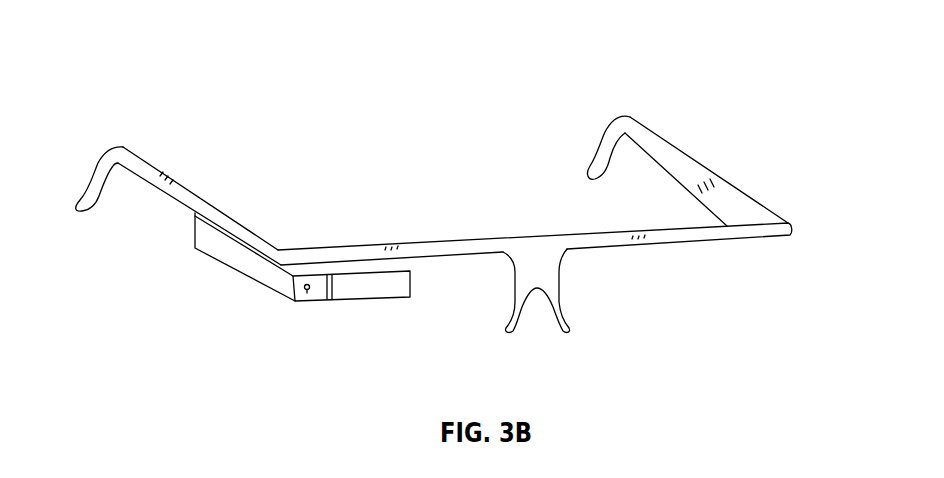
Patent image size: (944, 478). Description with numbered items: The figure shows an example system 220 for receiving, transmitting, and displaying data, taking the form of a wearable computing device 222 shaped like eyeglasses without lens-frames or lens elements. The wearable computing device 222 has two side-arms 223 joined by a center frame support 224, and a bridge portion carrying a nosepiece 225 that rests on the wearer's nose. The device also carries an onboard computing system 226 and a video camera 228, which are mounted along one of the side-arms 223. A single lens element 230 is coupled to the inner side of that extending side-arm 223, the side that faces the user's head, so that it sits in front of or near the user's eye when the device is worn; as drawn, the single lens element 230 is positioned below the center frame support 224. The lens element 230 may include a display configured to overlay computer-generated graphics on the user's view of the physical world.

The system 220 is at (768, 160).
The wearable computing device 222 is at (775, 279).
The side-arms 223 is at (175, 206).
The center frame support 224 is at (447, 245).
The nosepiece 225 is at (556, 278).
The onboard computing system 226 is at (232, 259).
The video camera 228 is at (308, 294).
The single lens element 230 is at (390, 302).